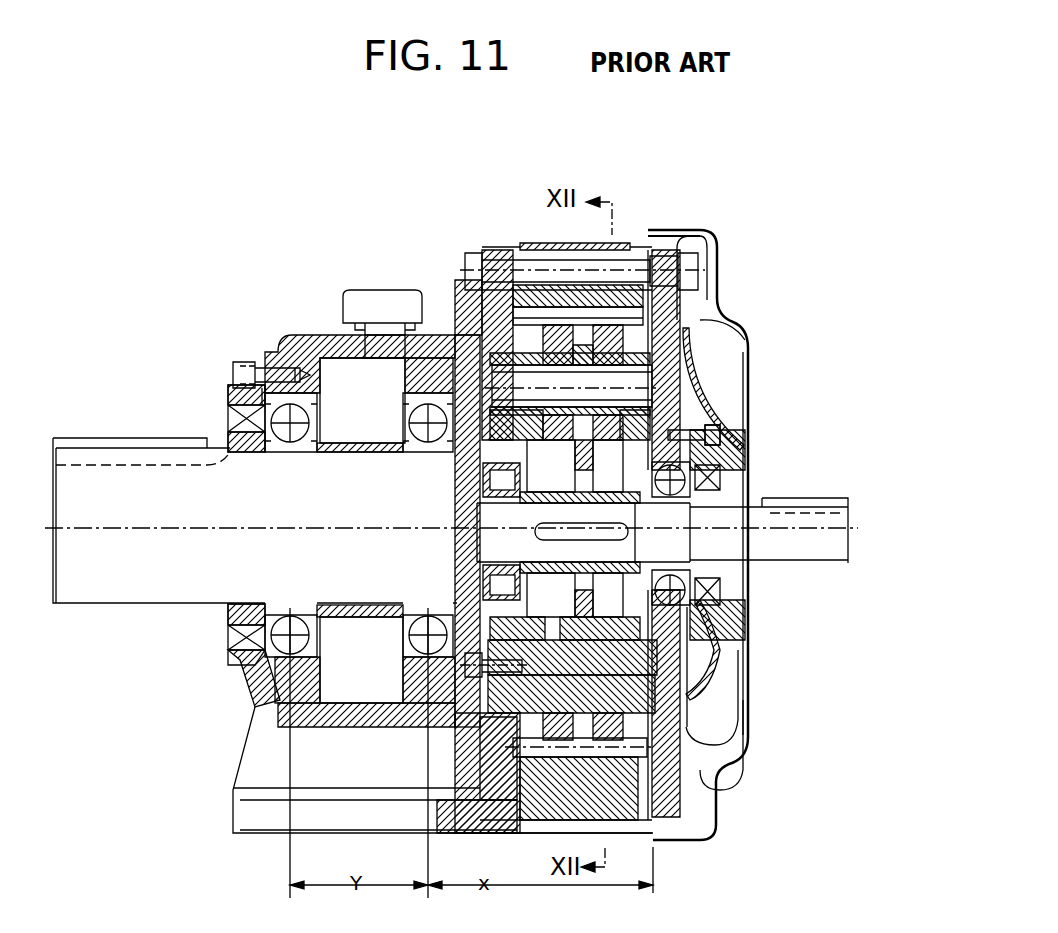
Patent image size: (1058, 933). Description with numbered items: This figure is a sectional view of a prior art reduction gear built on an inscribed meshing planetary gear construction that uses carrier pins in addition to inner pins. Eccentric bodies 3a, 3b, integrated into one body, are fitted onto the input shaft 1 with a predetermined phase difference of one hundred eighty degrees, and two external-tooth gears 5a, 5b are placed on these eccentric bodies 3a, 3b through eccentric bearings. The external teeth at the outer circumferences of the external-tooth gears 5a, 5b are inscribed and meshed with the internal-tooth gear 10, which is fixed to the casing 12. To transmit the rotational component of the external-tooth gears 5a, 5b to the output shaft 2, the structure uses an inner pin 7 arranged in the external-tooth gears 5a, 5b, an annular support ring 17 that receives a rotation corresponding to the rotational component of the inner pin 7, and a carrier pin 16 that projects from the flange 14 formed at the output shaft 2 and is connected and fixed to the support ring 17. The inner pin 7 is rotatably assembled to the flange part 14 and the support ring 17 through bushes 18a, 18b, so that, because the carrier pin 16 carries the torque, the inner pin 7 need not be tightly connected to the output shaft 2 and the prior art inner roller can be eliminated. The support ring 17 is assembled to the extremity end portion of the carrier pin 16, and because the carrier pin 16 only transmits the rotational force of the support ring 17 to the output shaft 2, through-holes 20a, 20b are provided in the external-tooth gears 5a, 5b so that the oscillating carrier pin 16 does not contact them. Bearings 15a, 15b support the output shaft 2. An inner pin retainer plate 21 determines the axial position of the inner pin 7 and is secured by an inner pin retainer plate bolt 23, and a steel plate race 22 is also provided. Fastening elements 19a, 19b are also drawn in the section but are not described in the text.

The input shaft 1 is at (783, 552).
The output shaft 2 is at (172, 493).
The eccentric body 3a is at (480, 525).
The eccentric body 3b is at (742, 478).
The external-tooth gear 5a is at (710, 240).
The external-tooth gear 5b is at (620, 280).
The inner pin 7 is at (700, 372).
The internal-tooth gear 10 is at (628, 243).
The casing 12 is at (725, 420).
The flange 14 is at (456, 455).
The bearing 15a is at (300, 372).
The bearing 15b is at (420, 405).
The carrier pin 16 is at (655, 695).
The annular support ring 17 is at (700, 640).
The bush 18a is at (700, 338).
The bush 18b is at (500, 355).
The bolt 19a is at (690, 308).
The nut 19b is at (700, 280).
The through-hole 20a is at (660, 750).
The through-hole 20b is at (640, 770).
The inner pin retainer plate 21 is at (478, 350).
The steel plate race 22 is at (640, 395).
The inner pin retainer plate bolt 23 is at (476, 665).